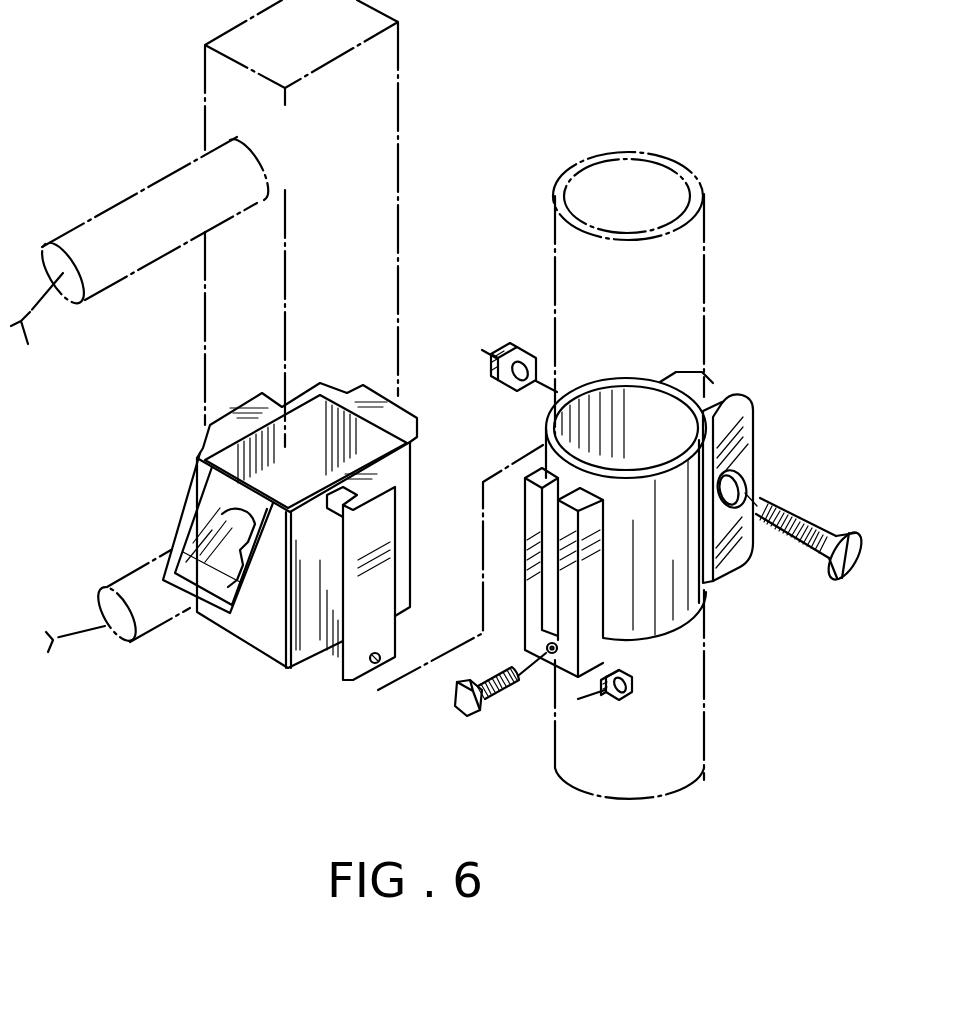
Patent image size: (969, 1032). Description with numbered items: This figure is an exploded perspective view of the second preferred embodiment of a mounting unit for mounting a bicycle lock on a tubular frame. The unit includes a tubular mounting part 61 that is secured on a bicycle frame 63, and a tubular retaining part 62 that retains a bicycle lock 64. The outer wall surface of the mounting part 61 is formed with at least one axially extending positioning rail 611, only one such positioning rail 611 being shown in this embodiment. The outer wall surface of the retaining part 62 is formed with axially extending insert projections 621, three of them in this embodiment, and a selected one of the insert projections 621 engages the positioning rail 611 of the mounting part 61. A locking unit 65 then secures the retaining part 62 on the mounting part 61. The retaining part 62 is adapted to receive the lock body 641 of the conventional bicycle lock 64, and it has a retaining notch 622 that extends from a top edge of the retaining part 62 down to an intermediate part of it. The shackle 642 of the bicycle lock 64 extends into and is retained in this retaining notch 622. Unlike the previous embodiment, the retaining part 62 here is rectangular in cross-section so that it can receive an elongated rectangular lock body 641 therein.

The tubular mounting part 61 is at (620, 524).
The positioning rail 611 is at (557, 557).
The tubular retaining part 62 is at (277, 566).
The insert projection 621 is at (362, 673).
The retaining notch 622 is at (207, 578).
The bicycle frame 63 is at (693, 276).
The bicycle lock 64 is at (141, 198).
The lock body 641 is at (388, 264).
The shackle 642 is at (52, 655).
The locking unit 65 is at (470, 717).